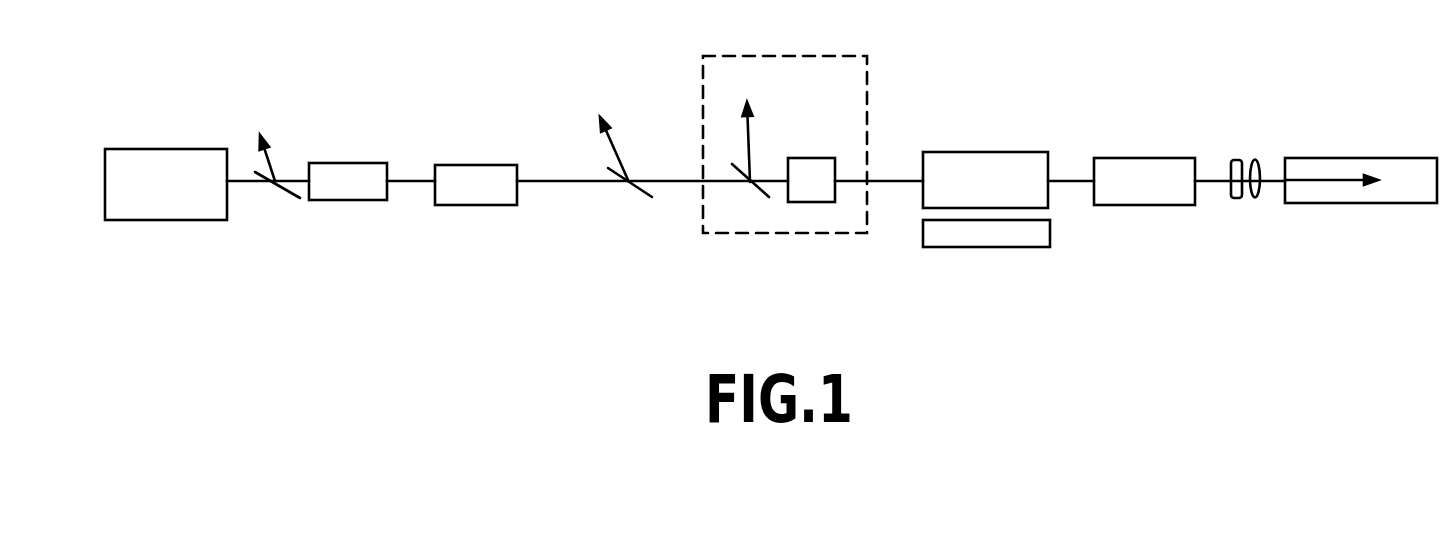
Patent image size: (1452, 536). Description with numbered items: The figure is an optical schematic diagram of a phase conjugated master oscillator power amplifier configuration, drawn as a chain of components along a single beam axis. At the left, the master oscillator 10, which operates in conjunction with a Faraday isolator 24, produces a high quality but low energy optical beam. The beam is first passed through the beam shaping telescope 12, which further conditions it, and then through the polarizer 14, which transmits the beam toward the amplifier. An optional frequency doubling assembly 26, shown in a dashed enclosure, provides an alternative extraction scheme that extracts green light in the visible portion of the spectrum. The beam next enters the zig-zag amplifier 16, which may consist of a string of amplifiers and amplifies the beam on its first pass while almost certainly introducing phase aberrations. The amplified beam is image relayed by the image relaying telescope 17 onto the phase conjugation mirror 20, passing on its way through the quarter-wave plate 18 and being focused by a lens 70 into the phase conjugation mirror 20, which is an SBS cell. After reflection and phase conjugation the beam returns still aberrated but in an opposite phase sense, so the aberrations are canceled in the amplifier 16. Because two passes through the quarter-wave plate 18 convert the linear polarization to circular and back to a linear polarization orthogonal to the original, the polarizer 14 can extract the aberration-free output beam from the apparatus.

The master oscillator 10 is at (180, 220).
The Faraday isolator 24 is at (330, 202).
The beam shaping telescope 12 is at (458, 163).
The polarizer 14 is at (644, 146).
The frequency doubling assembly 26 is at (807, 53).
The zig-zag amplifier 16 is at (1048, 150).
The image relaying telescope 17 is at (1117, 205).
The quarter-wave plate 18 is at (1235, 158).
The lens 70 is at (1255, 158).
The phase conjugation mirror 20 is at (1352, 203).